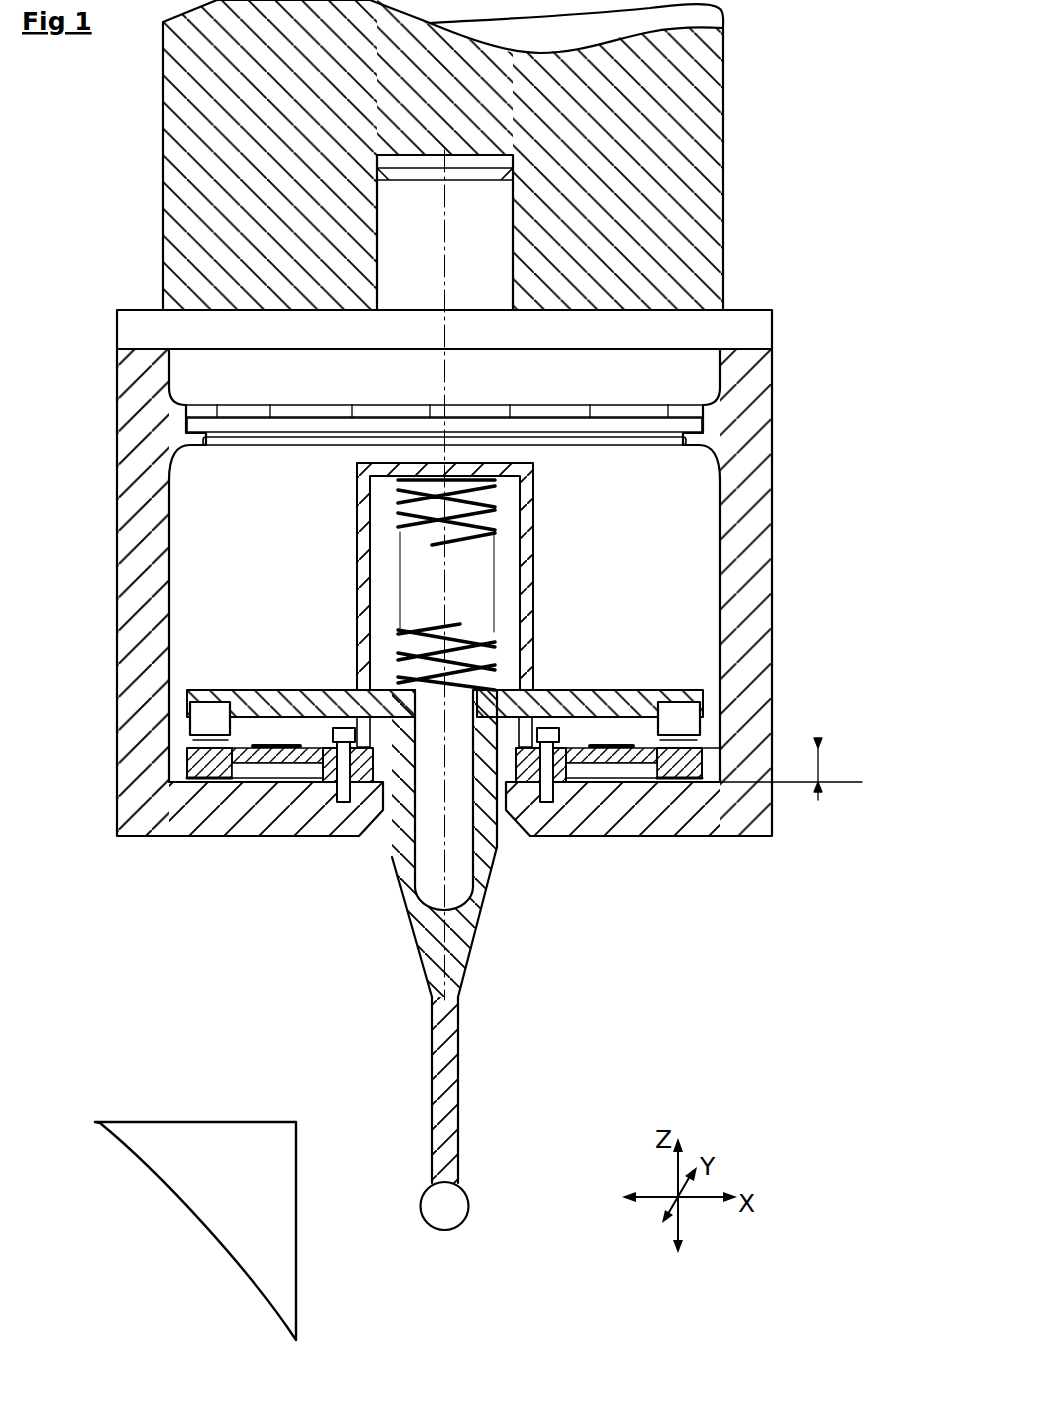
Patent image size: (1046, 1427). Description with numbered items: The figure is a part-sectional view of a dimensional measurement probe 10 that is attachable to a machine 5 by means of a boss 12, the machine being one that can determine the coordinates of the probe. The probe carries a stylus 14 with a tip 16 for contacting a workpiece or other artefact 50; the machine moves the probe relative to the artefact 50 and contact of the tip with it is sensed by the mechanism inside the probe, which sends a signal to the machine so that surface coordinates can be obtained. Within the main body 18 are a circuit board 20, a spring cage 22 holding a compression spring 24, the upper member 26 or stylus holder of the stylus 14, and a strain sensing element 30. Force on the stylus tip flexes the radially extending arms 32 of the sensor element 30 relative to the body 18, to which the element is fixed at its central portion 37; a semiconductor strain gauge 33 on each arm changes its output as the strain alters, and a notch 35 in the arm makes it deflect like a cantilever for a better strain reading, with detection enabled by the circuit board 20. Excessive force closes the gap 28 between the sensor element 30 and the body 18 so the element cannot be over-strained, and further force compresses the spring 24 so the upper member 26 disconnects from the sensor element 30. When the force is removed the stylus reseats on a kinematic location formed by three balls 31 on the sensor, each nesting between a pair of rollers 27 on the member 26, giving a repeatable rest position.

The machine 5 is at (723, 84).
The dimensional measurement probe 10 is at (512, 592).
The boss 12 is at (445, 575).
The stylus 14 is at (463, 1025).
The tip 16 is at (469, 1212).
The main body 18 is at (772, 567).
The circuit board 20 is at (280, 432).
The spring cage 22 is at (533, 508).
The compression spring 24 is at (455, 540).
The upper member 26 is at (342, 690).
The rollers 27 is at (178, 692).
The gap 28 is at (799, 769).
The strain sensing element 30 is at (503, 760).
The balls 31 is at (205, 742).
The radially extending arms 32 is at (300, 768).
The semiconductor strain gauge 33 is at (277, 760).
The notch 35 is at (250, 750).
The central portion 37 is at (378, 765).
The workpiece or artefact 50 is at (195, 1231).